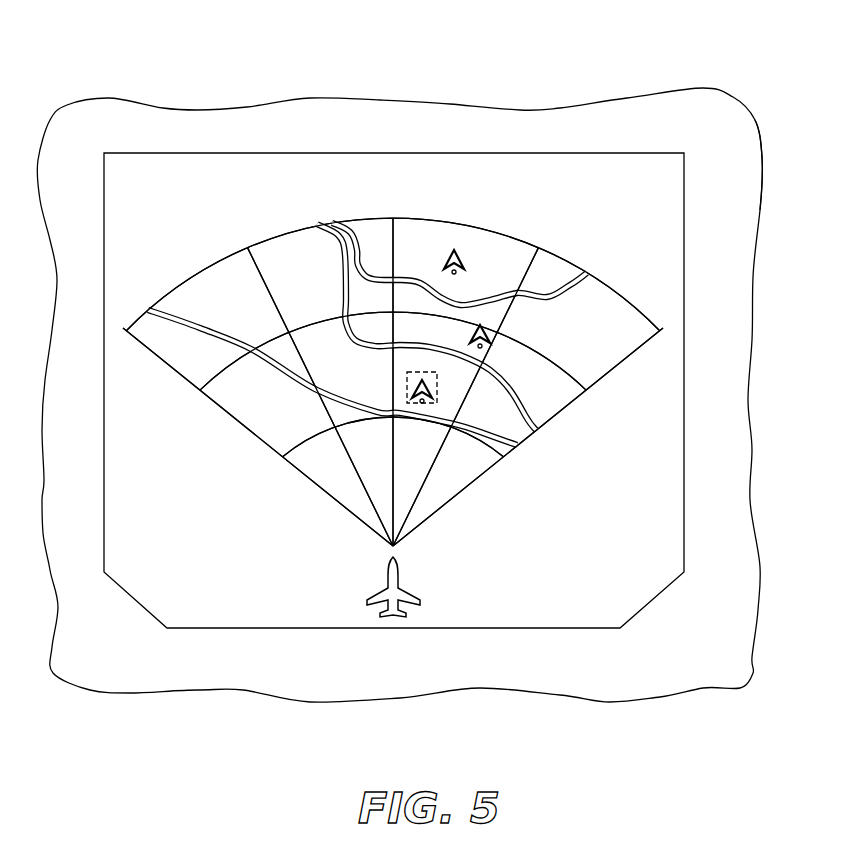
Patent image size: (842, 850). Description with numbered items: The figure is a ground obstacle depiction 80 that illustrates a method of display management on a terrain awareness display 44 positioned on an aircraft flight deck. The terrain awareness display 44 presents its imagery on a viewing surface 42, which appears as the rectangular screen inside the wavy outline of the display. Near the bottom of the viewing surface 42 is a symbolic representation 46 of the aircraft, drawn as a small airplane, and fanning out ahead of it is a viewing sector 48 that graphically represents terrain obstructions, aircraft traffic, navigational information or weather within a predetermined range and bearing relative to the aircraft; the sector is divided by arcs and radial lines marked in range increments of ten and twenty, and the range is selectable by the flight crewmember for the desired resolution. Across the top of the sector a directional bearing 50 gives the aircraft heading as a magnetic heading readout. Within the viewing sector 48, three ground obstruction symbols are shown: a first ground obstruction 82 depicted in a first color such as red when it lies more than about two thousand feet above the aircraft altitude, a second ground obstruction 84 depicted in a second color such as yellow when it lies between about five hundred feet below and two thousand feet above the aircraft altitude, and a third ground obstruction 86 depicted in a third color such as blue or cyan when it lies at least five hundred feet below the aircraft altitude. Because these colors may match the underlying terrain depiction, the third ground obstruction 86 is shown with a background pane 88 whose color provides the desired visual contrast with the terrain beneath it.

The ground obstacle depiction 80 is at (748, 72).
The terrain awareness display 44 is at (762, 153).
The viewing surface 42 is at (636, 216).
The directional bearing 50 is at (322, 194).
The viewing sector 48 is at (584, 424).
The symbolic representation of the aircraft 46 is at (406, 578).
The first ground obstruction 82 is at (466, 262).
The second ground obstruction 84 is at (470, 339).
The third ground obstruction 86 is at (430, 390).
The background pane 88 is at (437, 385).